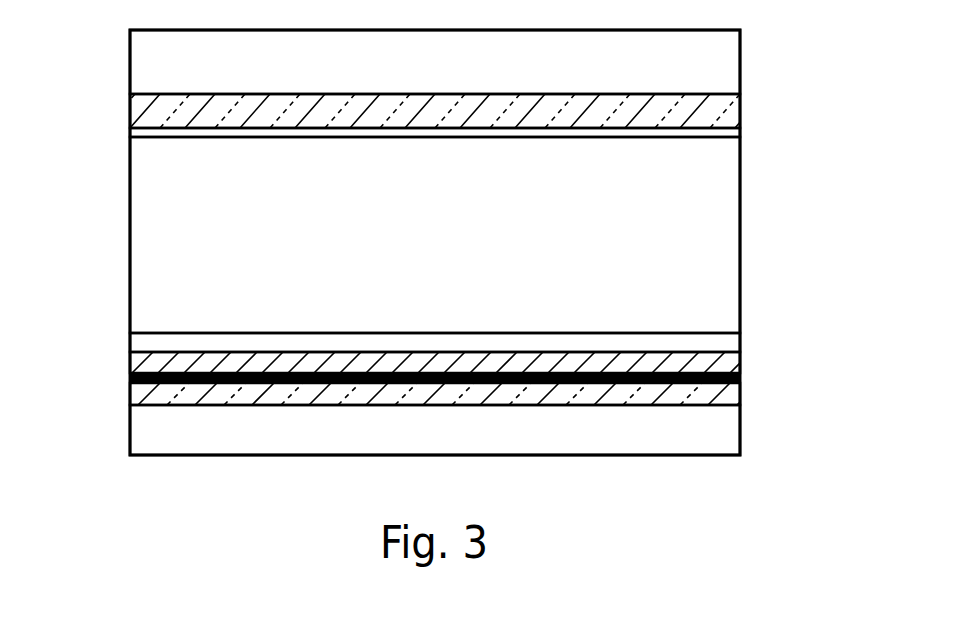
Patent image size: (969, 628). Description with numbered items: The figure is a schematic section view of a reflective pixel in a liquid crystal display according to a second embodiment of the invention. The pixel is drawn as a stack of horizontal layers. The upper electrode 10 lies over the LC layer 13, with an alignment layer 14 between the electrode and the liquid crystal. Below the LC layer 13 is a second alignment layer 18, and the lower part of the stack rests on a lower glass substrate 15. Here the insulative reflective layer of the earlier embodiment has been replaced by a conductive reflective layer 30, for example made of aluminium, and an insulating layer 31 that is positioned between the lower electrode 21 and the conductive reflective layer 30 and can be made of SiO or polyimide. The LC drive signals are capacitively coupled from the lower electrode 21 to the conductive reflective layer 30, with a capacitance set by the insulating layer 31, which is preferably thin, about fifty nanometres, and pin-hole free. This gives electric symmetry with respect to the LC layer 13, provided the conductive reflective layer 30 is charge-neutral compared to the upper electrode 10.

The upper electrode 10 is at (723, 237).
The LC layer 13 is at (130, 115).
The alignment layer 14 is at (740, 134).
The lower glass substrate 15 is at (728, 437).
The second alignment layer 18 is at (737, 70).
The lower electrode 21 is at (740, 397).
The conductive reflective layer 30 is at (740, 360).
The insulating layer 31 is at (740, 378).